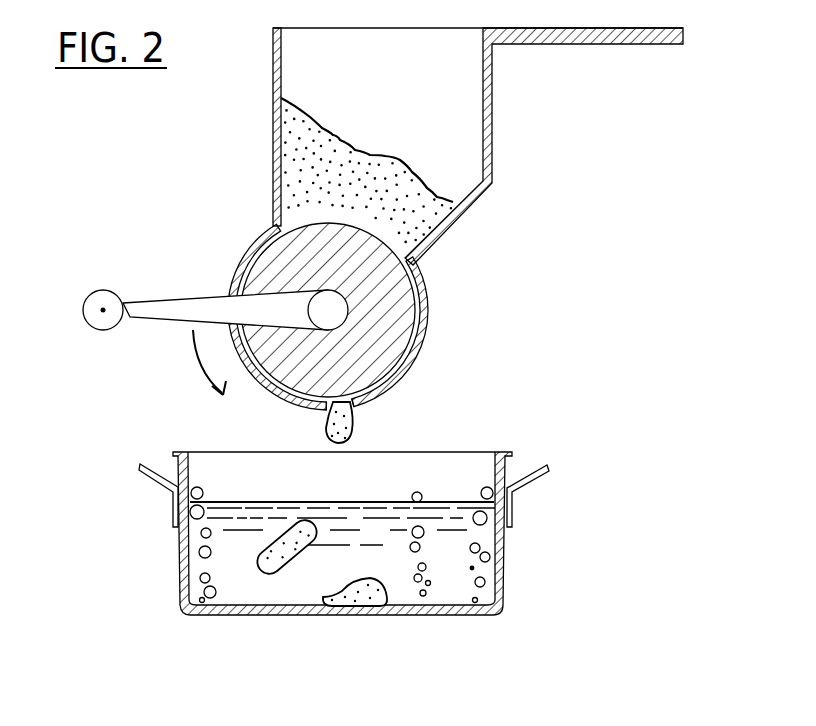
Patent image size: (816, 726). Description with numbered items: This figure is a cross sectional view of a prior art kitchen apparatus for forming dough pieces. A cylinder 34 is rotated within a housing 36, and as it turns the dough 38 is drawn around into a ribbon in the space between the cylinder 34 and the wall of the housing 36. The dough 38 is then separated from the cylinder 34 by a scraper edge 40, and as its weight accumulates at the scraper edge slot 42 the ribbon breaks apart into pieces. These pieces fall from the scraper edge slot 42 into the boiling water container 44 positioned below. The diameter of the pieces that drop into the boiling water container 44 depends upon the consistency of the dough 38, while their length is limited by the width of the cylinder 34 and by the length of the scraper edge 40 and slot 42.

The cylinder 34 is at (397, 347).
The housing 36 is at (237, 264).
The dough 38 is at (388, 187).
The scraper edge 40 is at (353, 404).
The scraper edge slot 42 is at (348, 414).
The boiling water container 44 is at (505, 568).